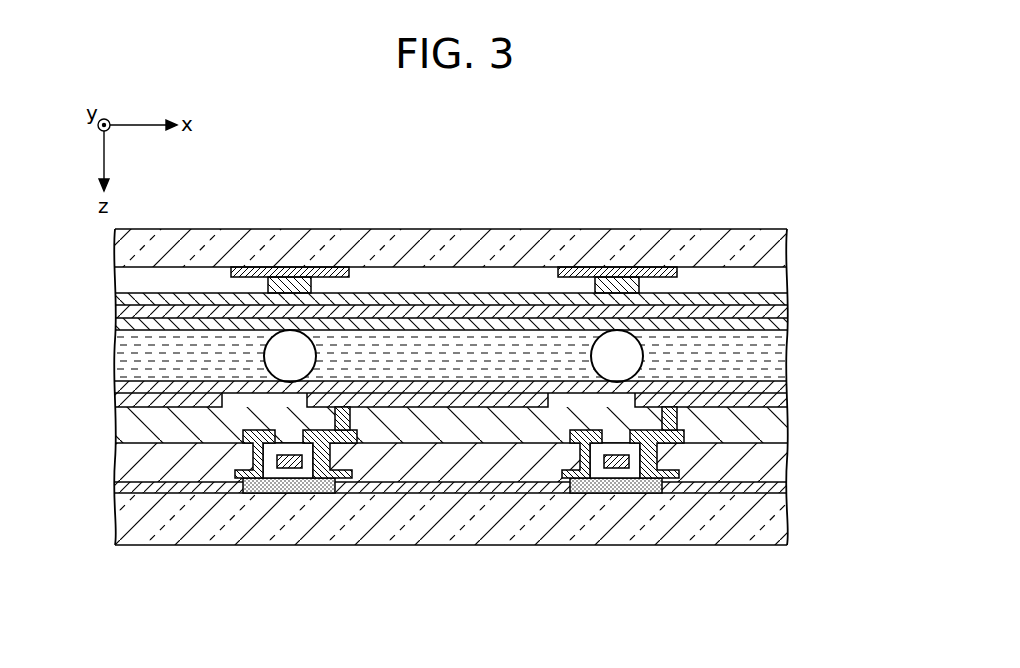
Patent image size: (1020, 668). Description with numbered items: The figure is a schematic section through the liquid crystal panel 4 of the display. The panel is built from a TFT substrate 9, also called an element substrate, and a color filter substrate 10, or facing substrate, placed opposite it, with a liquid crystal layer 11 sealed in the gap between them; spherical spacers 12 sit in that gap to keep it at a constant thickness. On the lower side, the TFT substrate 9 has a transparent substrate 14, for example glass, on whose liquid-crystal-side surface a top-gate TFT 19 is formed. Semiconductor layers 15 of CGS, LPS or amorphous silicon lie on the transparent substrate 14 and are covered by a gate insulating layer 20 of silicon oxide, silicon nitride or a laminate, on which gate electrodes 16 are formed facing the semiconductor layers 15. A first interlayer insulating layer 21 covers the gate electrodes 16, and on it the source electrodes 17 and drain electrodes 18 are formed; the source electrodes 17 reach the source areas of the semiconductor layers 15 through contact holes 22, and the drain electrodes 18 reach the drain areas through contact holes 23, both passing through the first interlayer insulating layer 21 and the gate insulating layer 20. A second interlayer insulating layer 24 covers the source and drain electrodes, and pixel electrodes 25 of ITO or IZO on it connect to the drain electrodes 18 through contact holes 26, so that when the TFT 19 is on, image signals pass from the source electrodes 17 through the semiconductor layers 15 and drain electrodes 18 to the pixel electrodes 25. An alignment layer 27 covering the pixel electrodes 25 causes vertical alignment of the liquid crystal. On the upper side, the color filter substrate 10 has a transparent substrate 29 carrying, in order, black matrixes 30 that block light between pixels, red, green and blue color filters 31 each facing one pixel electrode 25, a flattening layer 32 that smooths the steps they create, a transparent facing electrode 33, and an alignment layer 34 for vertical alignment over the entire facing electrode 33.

The liquid crystal panel 4 is at (453, 204).
The TFT substrate 9 is at (106, 387).
The color filter substrate 10 is at (106, 231).
The liquid crystal layer 11 is at (422, 284).
The spherical spacer 12 is at (617, 350).
The transparent substrate 14 is at (767, 520).
The semiconductor layer 15 is at (266, 488).
The gate electrode 16 is at (290, 466).
The source electrode 17 is at (243, 436).
The drain electrode 18 is at (347, 418).
The TFT 19 is at (426, 521).
The gate insulating layer 20 is at (770, 488).
The first interlayer insulating layer 21 is at (772, 462).
The contact hole 22 is at (255, 474).
The contact hole 23 is at (323, 461).
The second interlayer insulating layer 24 is at (770, 422).
The pixel electrode 25 is at (465, 396).
The contact hole 26 is at (352, 409).
The alignment layer 27 is at (767, 387).
The transparent substrate 29 is at (767, 248).
The black matrix 30 is at (287, 267).
The color filter 31 is at (386, 270).
The flattening layer 32 is at (780, 300).
The facing electrode 33 is at (772, 310).
The alignment layer 34 is at (780, 327).